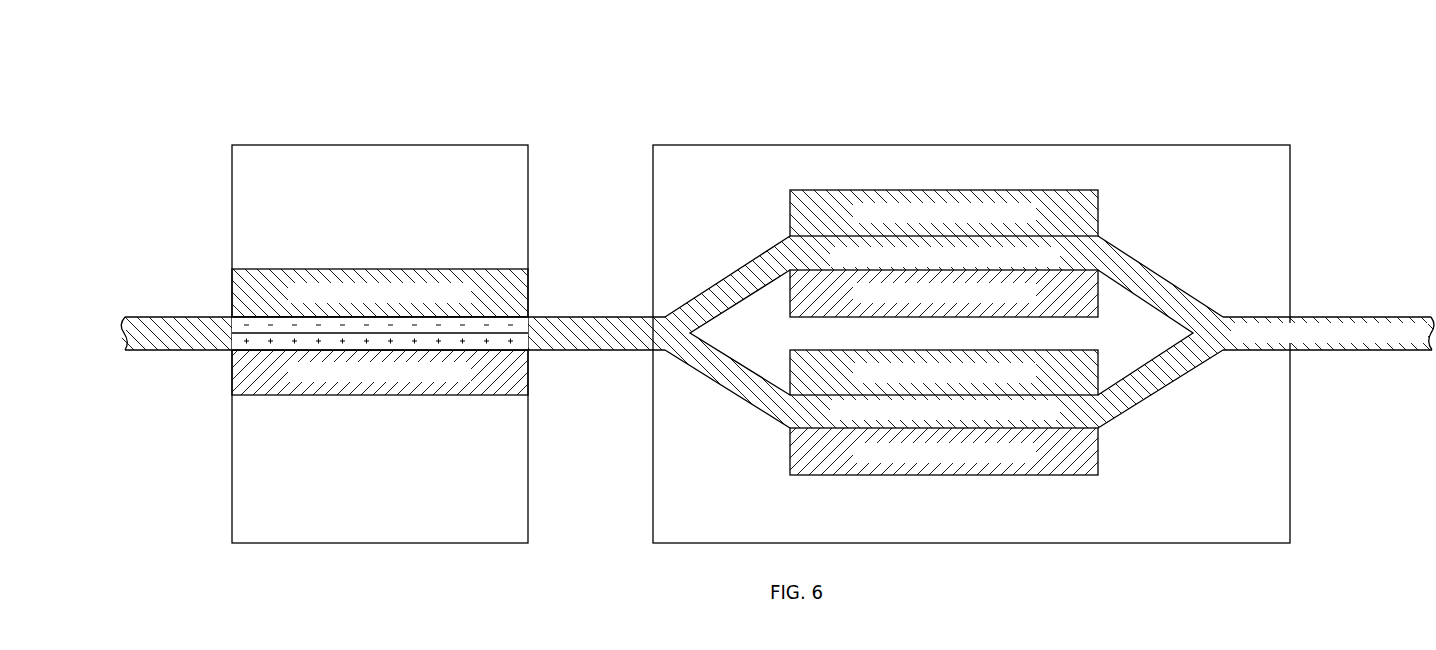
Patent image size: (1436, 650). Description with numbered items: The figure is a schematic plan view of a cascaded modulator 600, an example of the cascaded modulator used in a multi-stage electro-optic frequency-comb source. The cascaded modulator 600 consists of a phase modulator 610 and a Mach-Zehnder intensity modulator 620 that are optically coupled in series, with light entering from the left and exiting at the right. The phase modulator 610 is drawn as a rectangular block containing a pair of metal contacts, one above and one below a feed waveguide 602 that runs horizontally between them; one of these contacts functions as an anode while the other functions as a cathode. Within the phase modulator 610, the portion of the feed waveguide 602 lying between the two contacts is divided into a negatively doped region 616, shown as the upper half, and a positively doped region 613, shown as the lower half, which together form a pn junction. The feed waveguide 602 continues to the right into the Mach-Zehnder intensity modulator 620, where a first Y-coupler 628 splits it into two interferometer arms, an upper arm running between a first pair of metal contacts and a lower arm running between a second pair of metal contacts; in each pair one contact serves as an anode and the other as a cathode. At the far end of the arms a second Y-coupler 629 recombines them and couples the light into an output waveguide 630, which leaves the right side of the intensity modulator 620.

The cascaded modulator 600 is at (172, 92).
The feed waveguide 602 is at (583, 351).
The phase modulator 610 is at (333, 344).
The positively doped region 613 is at (232, 345).
The negatively doped region 616 is at (232, 322).
The Mach-Zehnder intensity modulator 620 is at (971, 344).
The Y-coupler 628 is at (709, 404).
The Y-coupler 629 is at (1188, 401).
The output waveguide 630 is at (1426, 342).